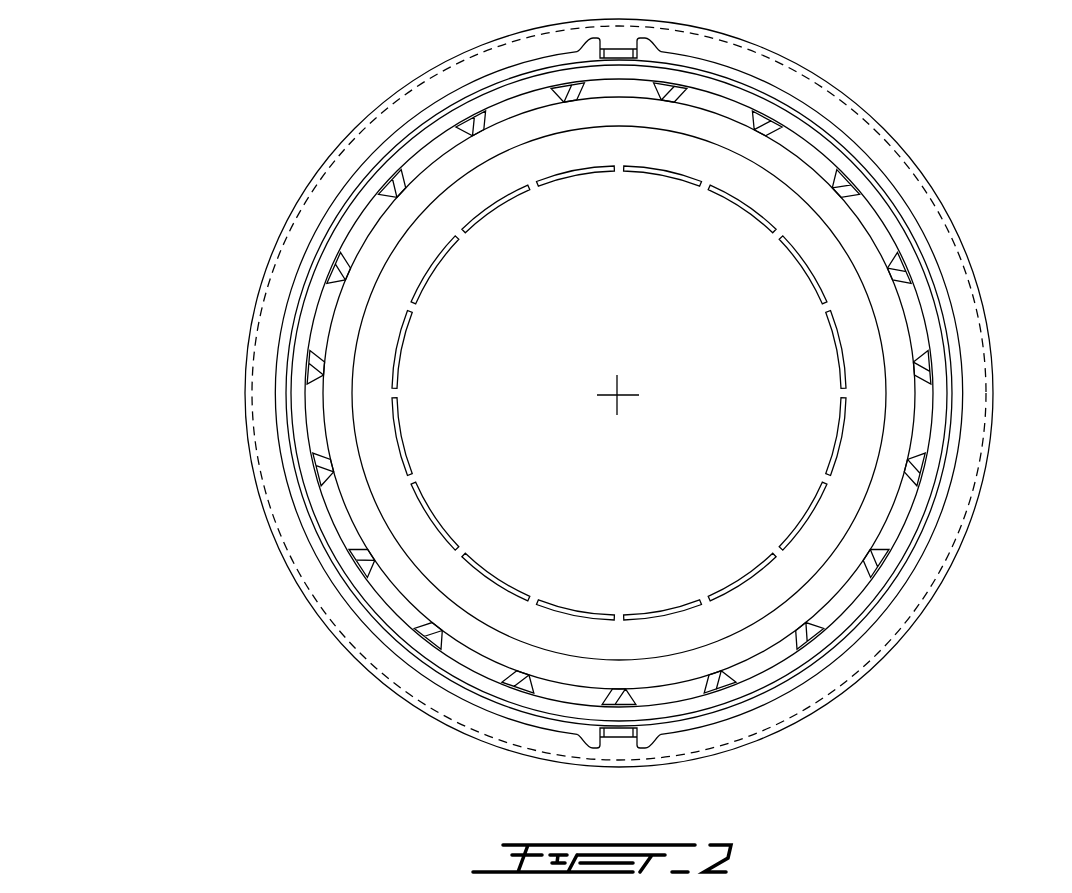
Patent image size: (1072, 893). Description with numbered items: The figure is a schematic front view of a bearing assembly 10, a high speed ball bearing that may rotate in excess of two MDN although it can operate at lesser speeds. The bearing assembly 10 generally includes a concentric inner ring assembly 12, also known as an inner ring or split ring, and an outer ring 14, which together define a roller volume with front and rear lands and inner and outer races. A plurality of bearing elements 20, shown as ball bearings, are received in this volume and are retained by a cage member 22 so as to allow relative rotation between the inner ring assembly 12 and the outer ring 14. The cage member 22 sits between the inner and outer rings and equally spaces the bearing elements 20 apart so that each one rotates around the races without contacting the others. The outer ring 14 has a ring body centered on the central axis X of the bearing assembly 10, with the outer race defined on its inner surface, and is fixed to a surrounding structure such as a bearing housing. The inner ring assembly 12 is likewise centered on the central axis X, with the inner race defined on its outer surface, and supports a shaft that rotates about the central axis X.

The bearing assembly 10 is at (602, 393).
The inner ring assembly 12 is at (765, 183).
The outer ring 14 is at (963, 283).
The bearing elements 20 is at (822, 142).
The cage member 22 is at (845, 188).
The central axis X is at (617, 395).